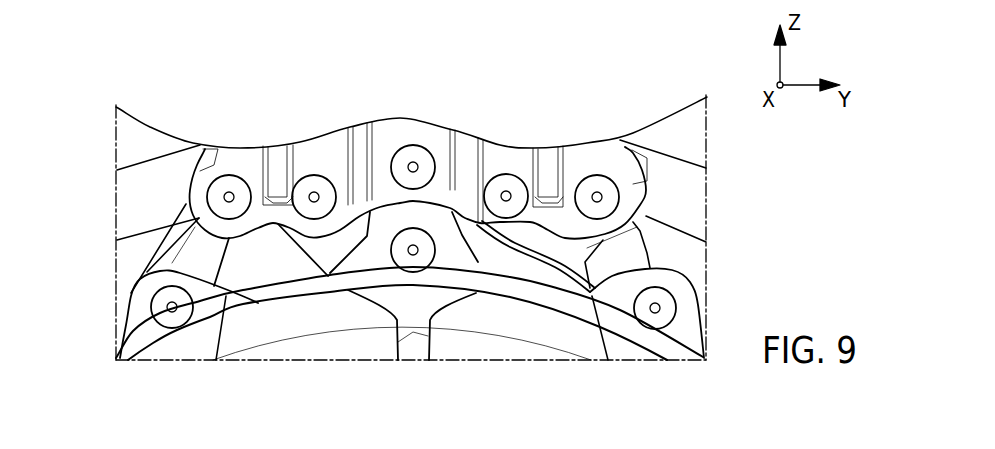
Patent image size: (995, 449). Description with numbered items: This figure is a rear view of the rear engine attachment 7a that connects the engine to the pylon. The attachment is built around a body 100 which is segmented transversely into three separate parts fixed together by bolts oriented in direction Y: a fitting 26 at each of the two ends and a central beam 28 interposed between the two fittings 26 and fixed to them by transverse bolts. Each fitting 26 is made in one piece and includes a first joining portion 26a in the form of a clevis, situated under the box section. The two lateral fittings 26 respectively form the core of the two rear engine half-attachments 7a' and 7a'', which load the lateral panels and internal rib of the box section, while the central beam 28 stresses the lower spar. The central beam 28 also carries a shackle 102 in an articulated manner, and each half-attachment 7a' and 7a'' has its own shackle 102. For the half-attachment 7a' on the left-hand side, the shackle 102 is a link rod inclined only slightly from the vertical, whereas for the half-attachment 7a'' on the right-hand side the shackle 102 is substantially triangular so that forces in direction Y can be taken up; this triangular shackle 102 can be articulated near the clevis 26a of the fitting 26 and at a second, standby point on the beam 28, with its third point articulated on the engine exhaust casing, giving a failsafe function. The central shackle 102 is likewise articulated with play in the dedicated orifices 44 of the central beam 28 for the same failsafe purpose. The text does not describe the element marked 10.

The body 100 is at (343, 102).
The fitting 26 is at (246, 160).
The dedicated orifices 44 is at (333, 178).
The central beam 28 is at (512, 130).
The rear engine attachment 7a is at (719, 149).
The rear engine half-attachment 7a' is at (122, 192).
The rear engine half-attachment 7a'' is at (718, 216).
The first joining portion 26a is at (199, 218).
The frame 10 is at (130, 361).
The shackle 102 is at (224, 275).